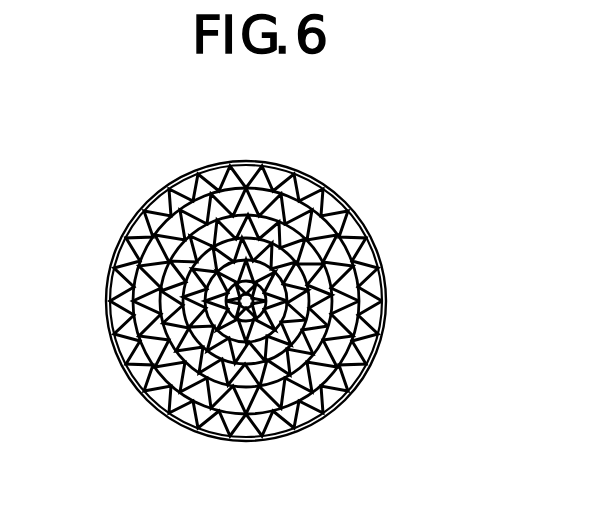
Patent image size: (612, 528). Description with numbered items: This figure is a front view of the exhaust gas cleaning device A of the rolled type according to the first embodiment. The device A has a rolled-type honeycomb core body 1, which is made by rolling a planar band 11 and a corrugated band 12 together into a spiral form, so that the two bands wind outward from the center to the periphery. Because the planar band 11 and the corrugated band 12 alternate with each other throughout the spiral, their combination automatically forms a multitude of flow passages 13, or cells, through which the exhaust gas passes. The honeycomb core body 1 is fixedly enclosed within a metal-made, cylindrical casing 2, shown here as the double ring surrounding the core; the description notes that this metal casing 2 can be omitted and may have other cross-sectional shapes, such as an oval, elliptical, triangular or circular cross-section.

The composite wire assembly A is at (322, 178).
The honeycomb core body 1 is at (365, 359).
The metal casing 2 is at (359, 218).
The planar band 11 is at (326, 406).
The corrugated band 12 is at (303, 423).
The flow passages 13 is at (262, 423).